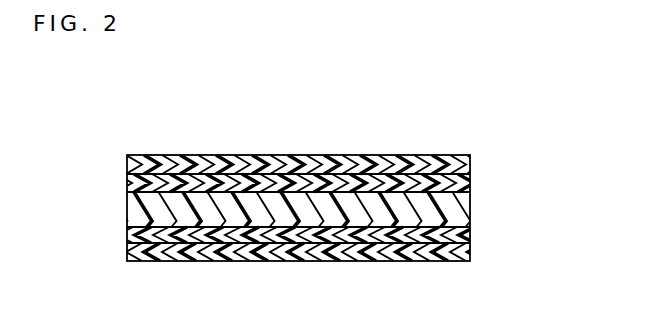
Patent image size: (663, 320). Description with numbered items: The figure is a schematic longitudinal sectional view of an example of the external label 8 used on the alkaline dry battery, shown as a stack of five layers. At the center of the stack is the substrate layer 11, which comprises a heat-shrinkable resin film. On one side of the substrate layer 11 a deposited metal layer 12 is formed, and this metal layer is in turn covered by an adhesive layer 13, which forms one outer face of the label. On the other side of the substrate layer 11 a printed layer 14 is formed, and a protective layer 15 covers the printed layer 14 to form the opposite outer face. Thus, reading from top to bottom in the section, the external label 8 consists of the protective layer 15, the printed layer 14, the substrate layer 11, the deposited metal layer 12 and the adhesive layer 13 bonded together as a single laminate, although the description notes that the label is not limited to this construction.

The external label 8 is at (166, 138).
The protective layer 15 is at (417, 155).
The printed layer 14 is at (463, 182).
The substrate layer 11 is at (466, 205).
The deposited metal layer 12 is at (468, 232).
The adhesive layer 13 is at (468, 252).